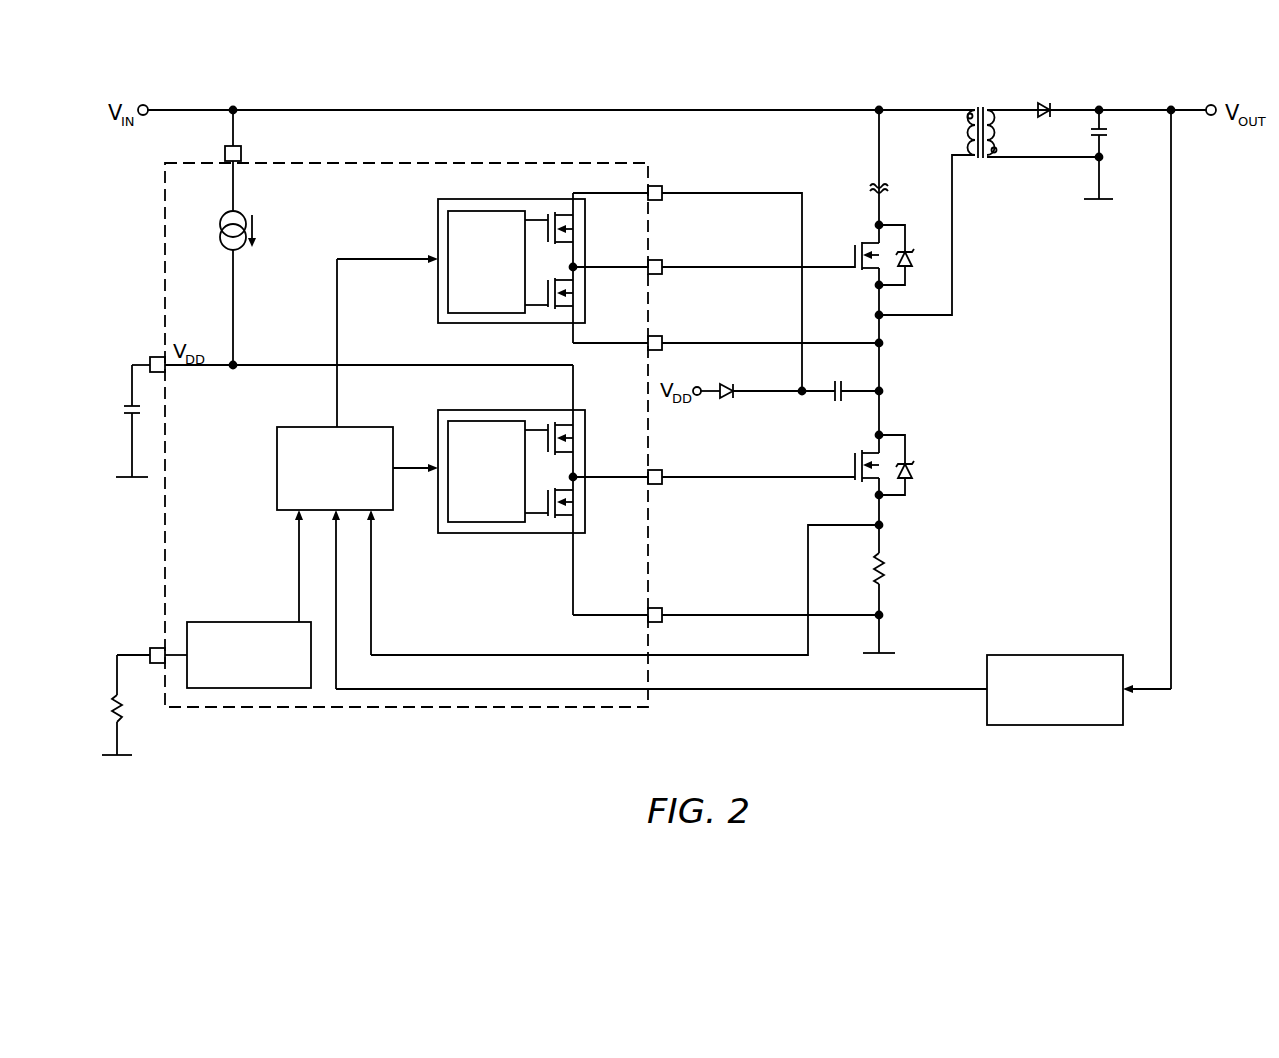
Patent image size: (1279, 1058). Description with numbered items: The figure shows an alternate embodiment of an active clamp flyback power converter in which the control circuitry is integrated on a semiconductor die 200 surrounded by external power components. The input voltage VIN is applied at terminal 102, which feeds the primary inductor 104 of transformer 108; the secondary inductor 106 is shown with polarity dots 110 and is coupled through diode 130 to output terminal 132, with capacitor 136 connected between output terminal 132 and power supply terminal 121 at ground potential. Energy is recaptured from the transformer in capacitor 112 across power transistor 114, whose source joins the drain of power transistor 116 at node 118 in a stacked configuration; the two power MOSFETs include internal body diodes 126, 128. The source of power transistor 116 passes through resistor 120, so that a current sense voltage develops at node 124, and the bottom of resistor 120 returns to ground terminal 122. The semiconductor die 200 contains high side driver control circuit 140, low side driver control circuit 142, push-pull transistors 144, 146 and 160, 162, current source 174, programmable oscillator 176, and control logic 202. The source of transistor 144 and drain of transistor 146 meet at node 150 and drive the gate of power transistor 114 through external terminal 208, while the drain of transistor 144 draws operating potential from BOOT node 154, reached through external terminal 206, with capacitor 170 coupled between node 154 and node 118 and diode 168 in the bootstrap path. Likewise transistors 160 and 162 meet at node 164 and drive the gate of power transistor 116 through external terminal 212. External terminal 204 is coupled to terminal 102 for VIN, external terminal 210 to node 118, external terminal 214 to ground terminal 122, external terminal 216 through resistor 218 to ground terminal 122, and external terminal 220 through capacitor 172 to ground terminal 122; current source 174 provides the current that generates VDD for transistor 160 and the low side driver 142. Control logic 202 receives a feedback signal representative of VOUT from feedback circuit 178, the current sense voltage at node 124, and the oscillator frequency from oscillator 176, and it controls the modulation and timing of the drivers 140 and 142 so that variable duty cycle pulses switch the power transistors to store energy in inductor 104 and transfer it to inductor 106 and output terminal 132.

The terminal 102 is at (142, 105).
The inductor 104 is at (972, 110).
The inductor 106 is at (990, 110).
The transformer 108 is at (982, 160).
The polarity dots 110 is at (967, 117).
The capacitor 112 is at (870, 188).
The power transistor 114 is at (852, 255).
The power transistor 116 is at (852, 465).
The node 118 is at (884, 345).
The resistor 120 is at (884, 570).
The power supply terminal 121 is at (1106, 200).
The ground terminal 122 is at (131, 479).
The node 124 is at (884, 527).
The internal body diode 126 is at (912, 256).
The internal body diode 128 is at (912, 466).
The diode 130 is at (1045, 98).
The output terminal 132 is at (1215, 105).
The capacitor 136 is at (1108, 132).
The high side driver control circuit 140 is at (490, 199).
The low side driver control circuit 142 is at (490, 410).
The push-pull transistor 144 is at (564, 213).
The push-pull transistor 146 is at (564, 309).
The node 150 is at (590, 265).
The BOOT node 154 is at (800, 389).
The push-pull transistor 160 is at (564, 423).
The push-pull transistor 162 is at (564, 518).
The node 164 is at (590, 475).
The diode 168 is at (728, 398).
The capacitor 170 is at (834, 401).
The capacitor 172 is at (127, 410).
The current source 174 is at (221, 225).
The programmable oscillator 176 is at (247, 622).
The feedback circuit 178 is at (1028, 655).
The semiconductor die 200 is at (428, 163).
The control logic 202 is at (309, 427).
The external terminal 204 is at (243, 160).
The external terminal 206 is at (662, 186).
The external terminal 208 is at (662, 260).
The external terminal 210 is at (662, 336).
The external terminal 212 is at (662, 484).
The external terminal 214 is at (662, 608).
The external terminal 216 is at (157, 648).
The resistor 218 is at (123, 718).
The external terminal 220 is at (158, 357).